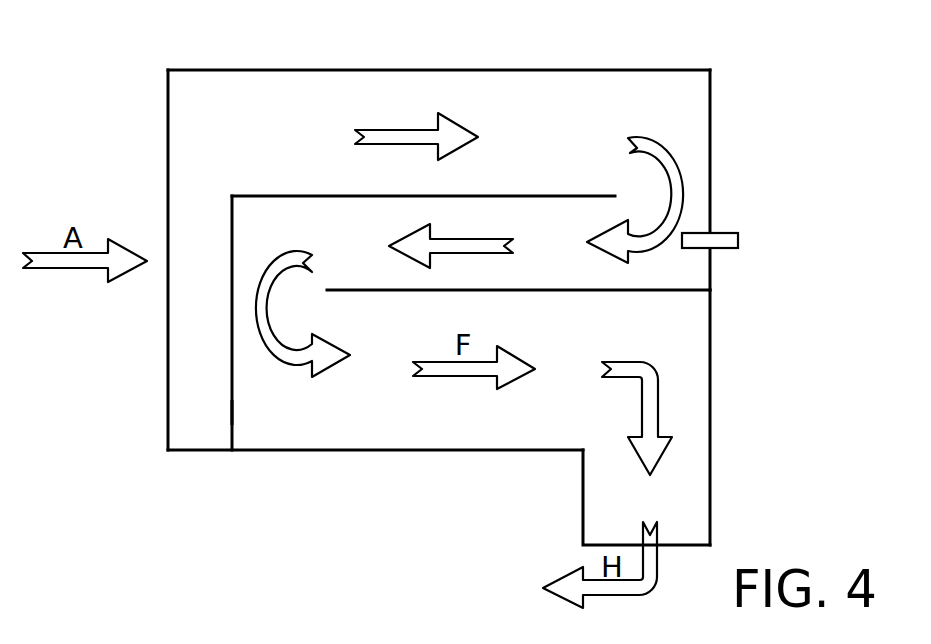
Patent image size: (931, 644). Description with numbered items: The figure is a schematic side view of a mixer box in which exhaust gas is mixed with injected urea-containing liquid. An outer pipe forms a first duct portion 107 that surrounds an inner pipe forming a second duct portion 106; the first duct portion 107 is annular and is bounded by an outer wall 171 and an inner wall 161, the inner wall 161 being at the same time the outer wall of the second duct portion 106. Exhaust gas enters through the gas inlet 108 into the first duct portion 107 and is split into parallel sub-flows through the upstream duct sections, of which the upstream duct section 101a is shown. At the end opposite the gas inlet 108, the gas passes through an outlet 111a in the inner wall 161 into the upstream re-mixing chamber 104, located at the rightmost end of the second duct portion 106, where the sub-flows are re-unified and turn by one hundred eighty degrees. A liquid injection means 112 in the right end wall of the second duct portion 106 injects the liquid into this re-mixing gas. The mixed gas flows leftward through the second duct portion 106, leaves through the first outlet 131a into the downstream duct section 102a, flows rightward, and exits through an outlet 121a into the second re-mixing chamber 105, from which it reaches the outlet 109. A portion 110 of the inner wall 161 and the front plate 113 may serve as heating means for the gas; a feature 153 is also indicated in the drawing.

The upstream duct section 101a is at (436, 98).
The downstream duct section 102a is at (441, 416).
The upstream re-mixing chamber 104 is at (682, 277).
The second re-mixing chamber 105 is at (683, 481).
The second duct portion 106 is at (322, 222).
The first duct portion 107 is at (320, 88).
The gas inlet 108 is at (168, 119).
The outlet 109 is at (688, 546).
The portion 110 is at (505, 196).
The outlet 111a is at (693, 155).
The liquid injection means 112 is at (738, 241).
The front plate 113 is at (232, 232).
The outlet 121a is at (683, 402).
The first outlet 131a is at (247, 306).
The opening 153 is at (232, 412).
The inner wall 161 is at (580, 195).
The outer wall 171 is at (353, 70).